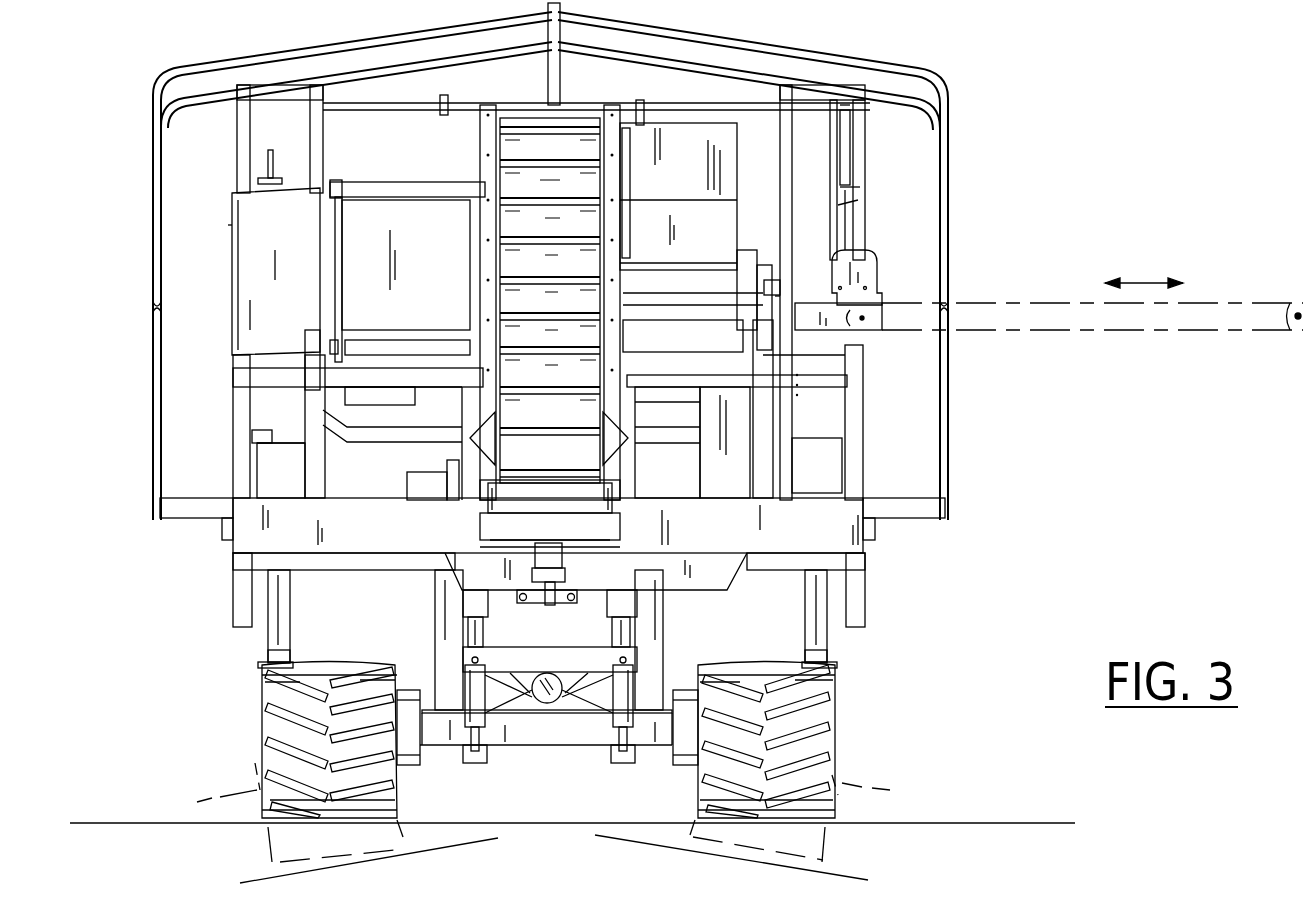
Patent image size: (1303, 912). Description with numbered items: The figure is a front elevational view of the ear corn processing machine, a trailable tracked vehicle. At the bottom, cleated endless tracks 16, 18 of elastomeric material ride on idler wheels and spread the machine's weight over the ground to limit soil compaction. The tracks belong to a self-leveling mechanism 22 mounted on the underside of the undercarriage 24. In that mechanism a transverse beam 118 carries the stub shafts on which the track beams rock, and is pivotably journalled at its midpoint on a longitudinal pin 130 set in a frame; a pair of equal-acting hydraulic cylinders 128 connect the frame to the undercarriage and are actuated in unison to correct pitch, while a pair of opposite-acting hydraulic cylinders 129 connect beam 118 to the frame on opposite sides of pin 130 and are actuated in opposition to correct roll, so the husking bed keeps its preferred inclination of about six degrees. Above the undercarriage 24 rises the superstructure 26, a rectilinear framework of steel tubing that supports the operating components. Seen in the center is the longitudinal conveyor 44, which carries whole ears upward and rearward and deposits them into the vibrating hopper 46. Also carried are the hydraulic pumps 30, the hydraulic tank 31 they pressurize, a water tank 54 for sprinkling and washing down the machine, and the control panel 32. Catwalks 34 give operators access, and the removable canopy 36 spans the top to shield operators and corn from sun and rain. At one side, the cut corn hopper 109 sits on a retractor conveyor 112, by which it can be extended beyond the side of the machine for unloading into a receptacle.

The cleated endless track 16 is at (277, 730).
The cleated endless track 18 is at (820, 710).
The self-leveling mechanism 22 is at (567, 836).
The undercarriage 24 is at (763, 540).
The superstructure 26 is at (808, 478).
The hydraulic pumps 30 is at (420, 482).
The hydraulic tank 31 is at (292, 330).
The control panel 32 is at (868, 235).
The catwalks 34 is at (204, 498).
The canopy 36 is at (706, 40).
The longitudinal conveyor 44 is at (585, 173).
The vibrating hopper 46 is at (682, 254).
The tank 54 is at (362, 472).
The cut corn hopper 109 is at (808, 162).
The retractor conveyor 112 is at (872, 322).
The transverse beam 118 is at (565, 703).
The equal-acting hydraulic cylinders 128 is at (472, 606).
The opposite-acting hydraulic cylinders 129 is at (475, 727).
The longitudinal pin 130 is at (545, 703).